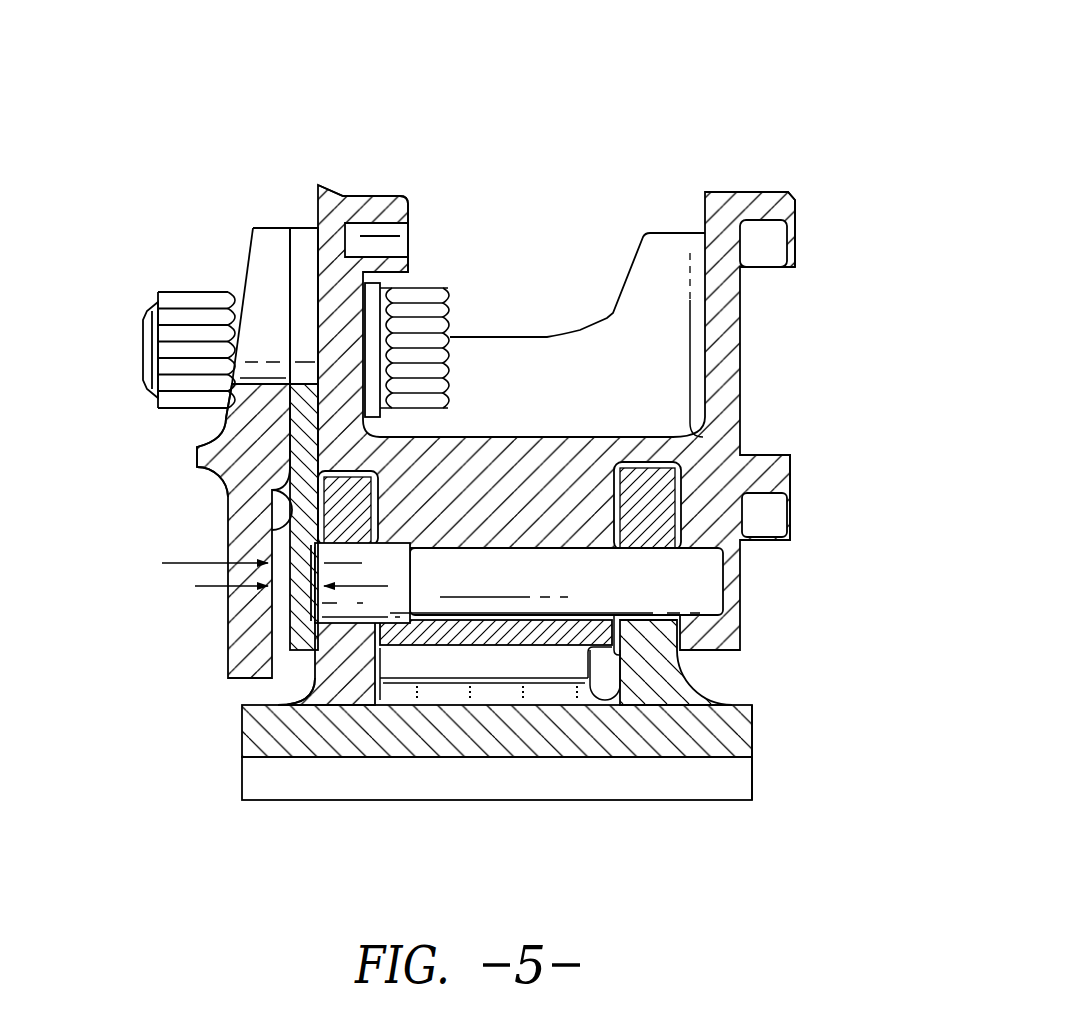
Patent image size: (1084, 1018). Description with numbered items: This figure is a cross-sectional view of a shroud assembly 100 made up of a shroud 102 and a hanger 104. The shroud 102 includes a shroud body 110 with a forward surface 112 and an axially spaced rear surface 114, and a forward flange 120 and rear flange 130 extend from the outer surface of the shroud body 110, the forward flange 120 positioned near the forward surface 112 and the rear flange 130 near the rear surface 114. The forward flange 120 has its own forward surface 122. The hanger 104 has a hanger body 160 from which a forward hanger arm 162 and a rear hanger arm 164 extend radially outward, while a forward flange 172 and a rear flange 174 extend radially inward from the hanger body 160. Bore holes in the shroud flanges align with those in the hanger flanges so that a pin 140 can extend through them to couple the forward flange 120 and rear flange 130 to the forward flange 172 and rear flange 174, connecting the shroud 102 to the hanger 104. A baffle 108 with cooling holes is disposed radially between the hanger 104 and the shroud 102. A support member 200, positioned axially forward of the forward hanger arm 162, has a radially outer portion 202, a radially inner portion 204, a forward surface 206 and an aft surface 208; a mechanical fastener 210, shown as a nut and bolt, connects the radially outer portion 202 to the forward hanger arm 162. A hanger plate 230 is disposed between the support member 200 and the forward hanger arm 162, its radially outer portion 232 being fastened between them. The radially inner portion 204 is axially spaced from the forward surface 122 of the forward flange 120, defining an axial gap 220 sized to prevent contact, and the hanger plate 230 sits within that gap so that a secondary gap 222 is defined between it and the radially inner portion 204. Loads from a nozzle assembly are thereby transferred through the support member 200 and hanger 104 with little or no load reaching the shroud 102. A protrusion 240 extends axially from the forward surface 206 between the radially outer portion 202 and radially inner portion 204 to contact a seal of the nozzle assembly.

The shroud assembly 100 is at (703, 87).
The shroud 102 is at (505, 784).
The hanger 104 is at (569, 411).
The baffle 108 is at (598, 668).
The shroud body 110 is at (477, 778).
The forward surface 112 is at (242, 732).
The rear surface 114 is at (752, 725).
The forward flange 120 is at (308, 658).
The forward surface 122 is at (316, 677).
The rear flange 130 is at (693, 680).
The pin 140 is at (693, 584).
The hanger body 160 is at (613, 278).
The forward hanger arm 162 is at (368, 186).
The rear hanger arm 164 is at (752, 176).
The forward flange 172 is at (537, 503).
The rear flange 174 is at (745, 516).
The support member 200 is at (254, 407).
The radially outer portion 202 is at (248, 257).
The radially inner portion 204 is at (176, 531).
The forward surface 206 is at (230, 518).
The aft surface 208 is at (232, 538).
The mechanical fastener 210 is at (185, 273).
The axial gap 220 is at (207, 588).
The secondary gap 222 is at (170, 565).
The hanger plate 230 is at (303, 217).
The radially outer portion 232 is at (407, 247).
The protrusion 240 is at (190, 457).